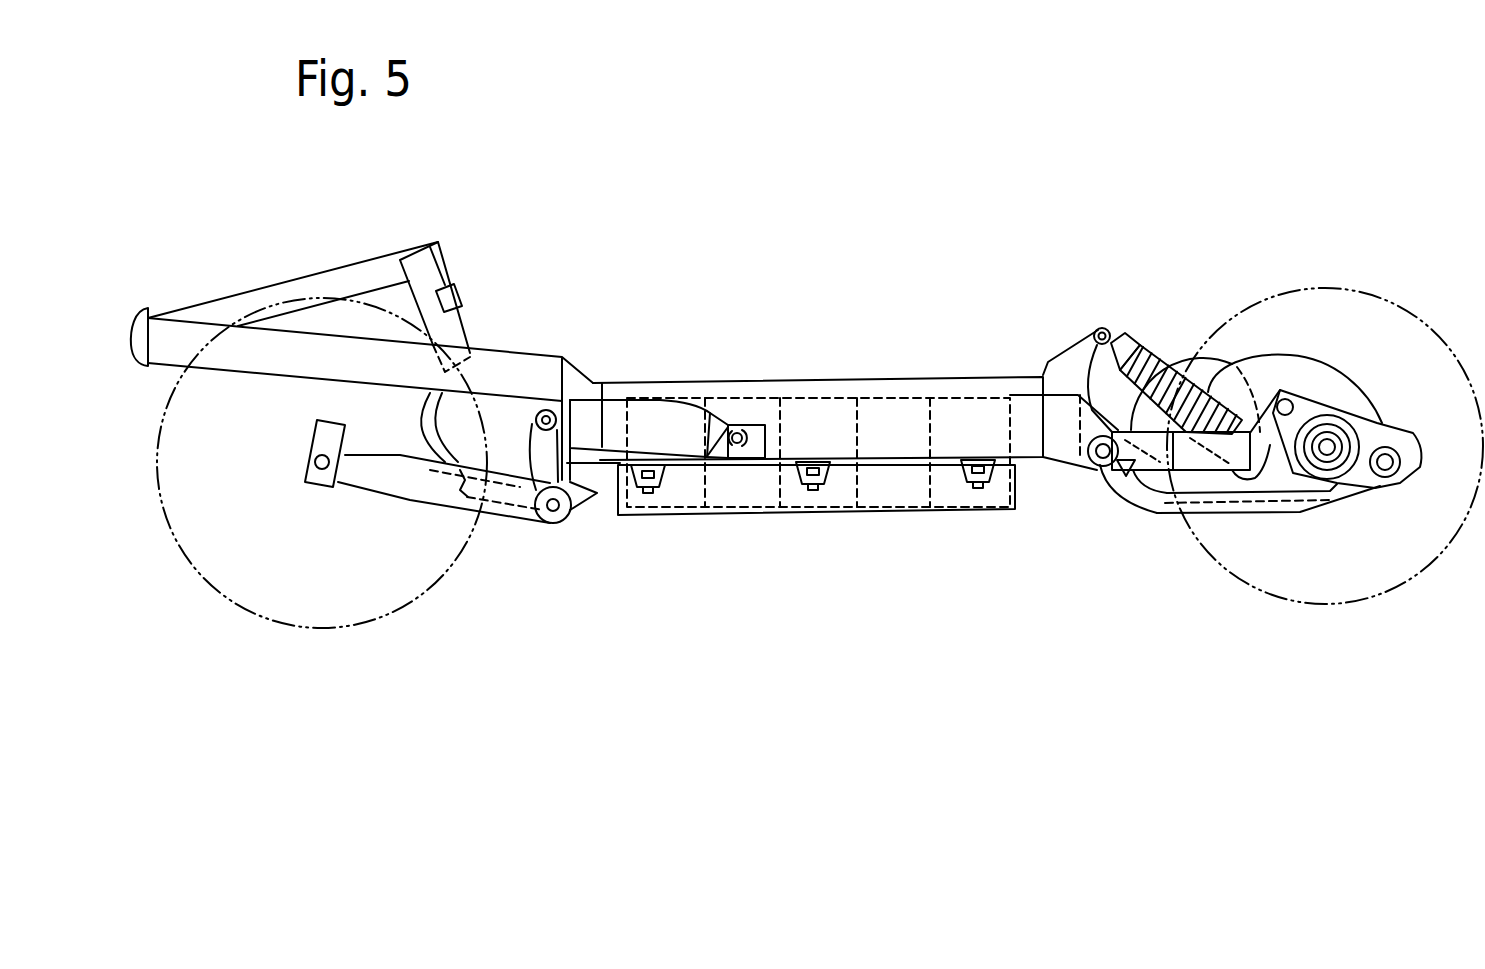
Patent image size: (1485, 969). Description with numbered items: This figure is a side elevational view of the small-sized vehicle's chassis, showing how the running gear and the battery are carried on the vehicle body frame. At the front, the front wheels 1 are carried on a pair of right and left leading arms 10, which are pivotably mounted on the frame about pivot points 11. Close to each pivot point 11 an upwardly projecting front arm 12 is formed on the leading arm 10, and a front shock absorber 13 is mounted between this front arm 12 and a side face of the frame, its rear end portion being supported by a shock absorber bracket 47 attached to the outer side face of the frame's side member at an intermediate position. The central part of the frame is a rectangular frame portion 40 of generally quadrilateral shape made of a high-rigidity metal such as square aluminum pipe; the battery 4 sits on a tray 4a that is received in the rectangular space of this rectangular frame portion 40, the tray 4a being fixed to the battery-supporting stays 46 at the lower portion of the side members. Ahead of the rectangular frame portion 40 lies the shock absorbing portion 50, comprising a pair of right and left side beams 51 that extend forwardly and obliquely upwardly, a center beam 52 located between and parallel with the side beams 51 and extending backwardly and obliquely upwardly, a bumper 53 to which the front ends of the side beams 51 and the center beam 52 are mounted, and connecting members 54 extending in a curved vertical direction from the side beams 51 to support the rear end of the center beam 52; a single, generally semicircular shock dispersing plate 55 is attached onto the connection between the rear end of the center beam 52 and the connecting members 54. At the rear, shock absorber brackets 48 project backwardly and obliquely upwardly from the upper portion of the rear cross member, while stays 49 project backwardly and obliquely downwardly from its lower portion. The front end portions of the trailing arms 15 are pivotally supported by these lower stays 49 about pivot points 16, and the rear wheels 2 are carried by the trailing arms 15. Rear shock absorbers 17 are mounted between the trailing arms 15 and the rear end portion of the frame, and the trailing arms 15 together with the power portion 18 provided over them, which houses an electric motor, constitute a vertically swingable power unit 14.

The front wheels 1 is at (427, 553).
The rear wheels 2 is at (1235, 580).
The battery 4 is at (937, 493).
The tray 4a is at (885, 493).
The leading arms 10 is at (395, 487).
The pivot points 11 is at (565, 523).
The front arm 12 is at (526, 447).
The front shock absorber 13 is at (661, 400).
The power unit 14 is at (1280, 531).
The trailing arms 15 is at (1150, 490).
The pivot points 16 is at (1100, 470).
The rear shock absorbers 17 is at (1163, 345).
The power portion 18 is at (1330, 360).
The rectangular frame portion 40 is at (850, 351).
The stays 46 is at (790, 488).
The shock absorber bracket 47 is at (755, 459).
The shock absorber brackets 48 is at (1080, 330).
The stays 49 is at (1071, 470).
The shock absorbing portion 50 is at (569, 321).
The side beams 51 is at (177, 367).
The center beam 52 is at (255, 292).
The bumper 53 is at (133, 307).
The connecting members 54 is at (466, 324).
The shock dispersing plate 55 is at (448, 260).